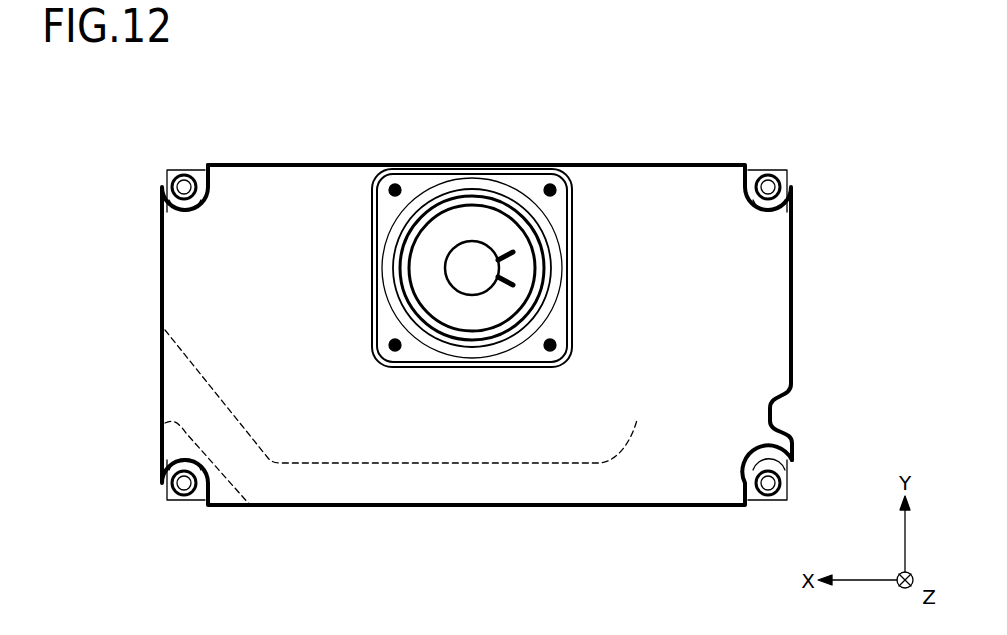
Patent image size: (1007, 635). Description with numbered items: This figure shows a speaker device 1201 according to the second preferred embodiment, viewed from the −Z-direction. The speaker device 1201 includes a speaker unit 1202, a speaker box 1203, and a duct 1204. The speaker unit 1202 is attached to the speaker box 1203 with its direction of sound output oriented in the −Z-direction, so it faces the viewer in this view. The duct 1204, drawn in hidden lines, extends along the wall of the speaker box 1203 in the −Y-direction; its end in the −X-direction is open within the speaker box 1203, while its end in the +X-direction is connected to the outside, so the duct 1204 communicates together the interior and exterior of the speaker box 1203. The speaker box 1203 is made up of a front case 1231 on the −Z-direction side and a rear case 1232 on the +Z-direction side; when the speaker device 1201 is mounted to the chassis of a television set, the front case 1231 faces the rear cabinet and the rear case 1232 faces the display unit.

The speaker device 1201 is at (640, 117).
The speaker unit 1202 is at (472, 183).
The speaker box 1203 is at (690, 180).
The duct 1204 is at (302, 462).
The front case 1231 is at (776, 279).
The rear case 1232 is at (794, 204).